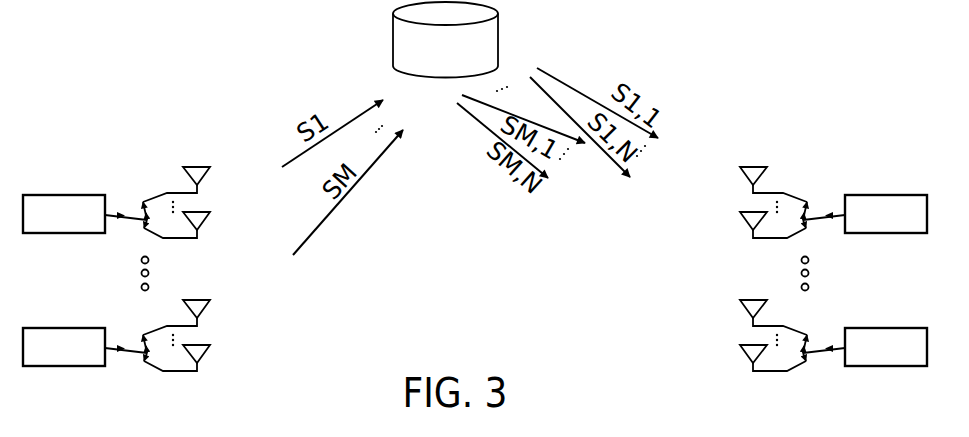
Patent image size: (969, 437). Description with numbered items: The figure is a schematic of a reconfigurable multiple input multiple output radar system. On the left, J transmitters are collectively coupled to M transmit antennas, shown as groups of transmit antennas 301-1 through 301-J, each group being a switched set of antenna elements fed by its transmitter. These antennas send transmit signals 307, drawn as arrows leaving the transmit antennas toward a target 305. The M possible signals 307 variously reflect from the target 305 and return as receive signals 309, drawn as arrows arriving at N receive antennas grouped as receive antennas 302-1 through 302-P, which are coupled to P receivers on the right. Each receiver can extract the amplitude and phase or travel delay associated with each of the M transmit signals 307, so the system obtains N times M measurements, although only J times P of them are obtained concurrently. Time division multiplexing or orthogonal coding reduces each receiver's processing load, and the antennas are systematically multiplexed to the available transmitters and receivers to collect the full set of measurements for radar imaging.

The transmit antennas 301-1 is at (156, 205).
The transmit antennas 301-J is at (156, 338).
The receive antennas 302-1 is at (797, 205).
The receive antennas 302-P is at (797, 338).
The target 305 is at (503, 42).
The transmit signals 307 is at (307, 89).
The receive signals 309 is at (652, 203).